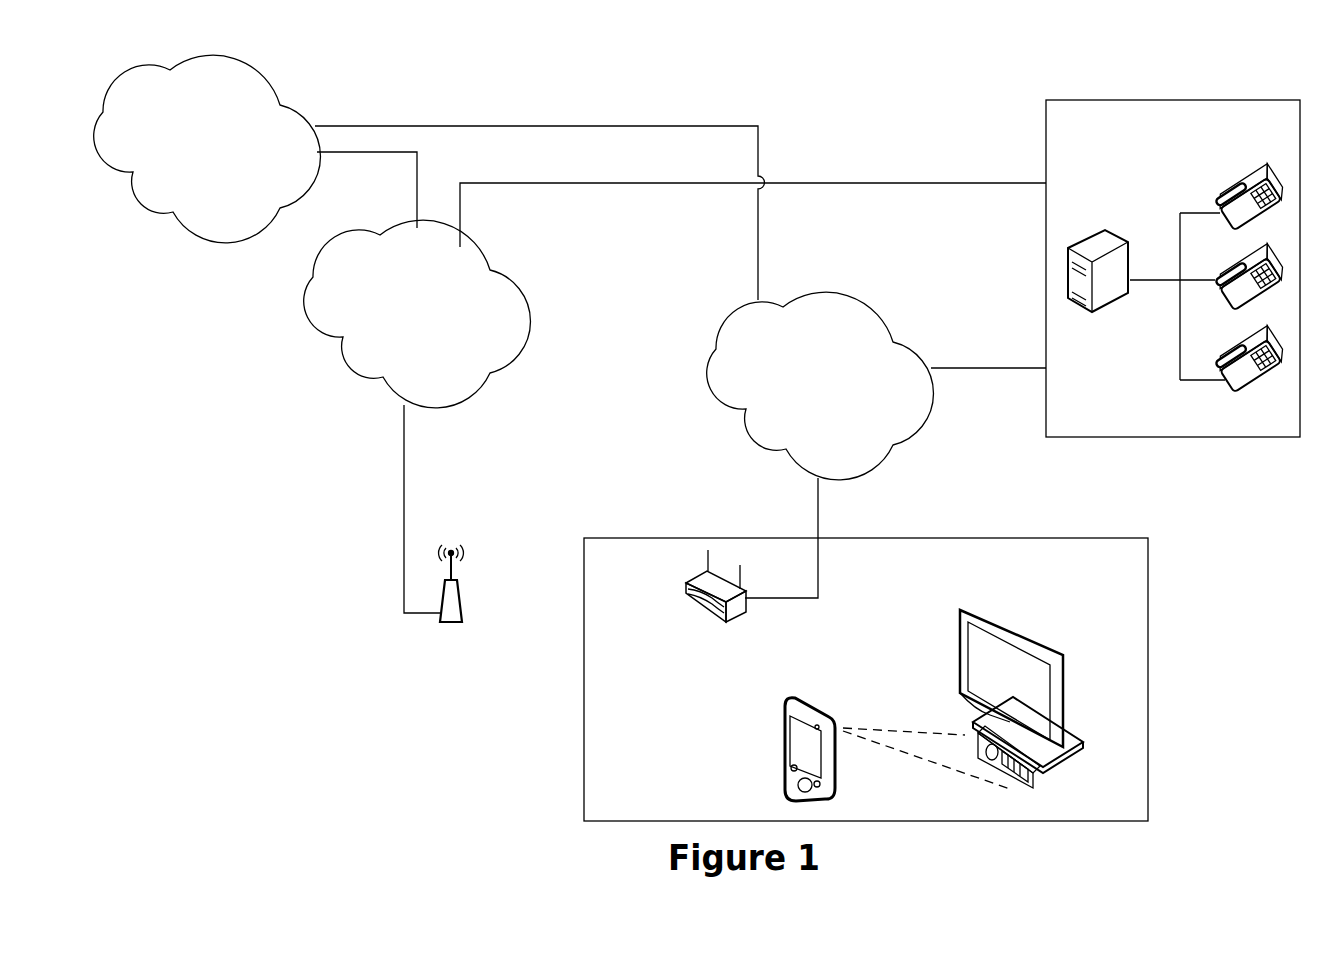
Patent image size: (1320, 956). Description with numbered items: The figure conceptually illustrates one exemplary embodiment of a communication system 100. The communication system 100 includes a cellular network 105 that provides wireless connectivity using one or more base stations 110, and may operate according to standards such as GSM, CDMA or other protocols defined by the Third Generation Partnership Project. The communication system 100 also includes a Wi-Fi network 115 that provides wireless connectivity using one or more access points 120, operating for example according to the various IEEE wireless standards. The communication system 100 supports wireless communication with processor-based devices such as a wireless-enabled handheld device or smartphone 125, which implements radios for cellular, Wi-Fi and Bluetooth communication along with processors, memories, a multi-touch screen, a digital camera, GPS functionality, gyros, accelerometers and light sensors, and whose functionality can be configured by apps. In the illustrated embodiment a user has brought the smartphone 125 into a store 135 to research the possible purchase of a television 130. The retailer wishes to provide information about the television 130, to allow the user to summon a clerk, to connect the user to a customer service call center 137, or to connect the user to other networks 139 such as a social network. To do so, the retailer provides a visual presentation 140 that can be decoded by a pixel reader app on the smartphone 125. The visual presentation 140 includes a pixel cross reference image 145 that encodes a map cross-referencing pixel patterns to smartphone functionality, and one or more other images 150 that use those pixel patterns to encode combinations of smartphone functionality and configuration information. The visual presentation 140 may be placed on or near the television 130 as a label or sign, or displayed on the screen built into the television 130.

The communication system 100 is at (1192, 82).
The cellular network 105 is at (389, 342).
The base station 110 is at (448, 626).
The Wi-Fi network 115 is at (783, 407).
The access point 120 is at (685, 590).
The smartphone 125 is at (785, 763).
The television 130 is at (1063, 690).
The store 135 is at (1091, 574).
The customer service call center 137 is at (1282, 140).
The other networks 139 is at (186, 181).
The visual presentation 140 is at (1016, 768).
The pixel cross reference image 145 is at (992, 762).
The other images 150 is at (1020, 786).